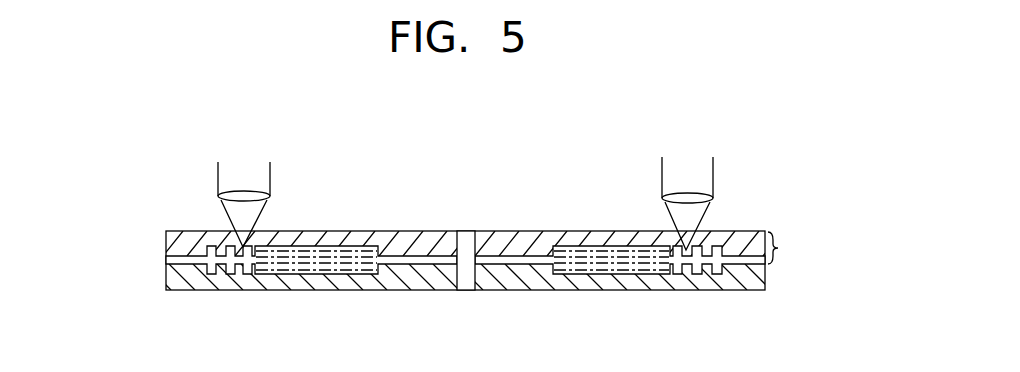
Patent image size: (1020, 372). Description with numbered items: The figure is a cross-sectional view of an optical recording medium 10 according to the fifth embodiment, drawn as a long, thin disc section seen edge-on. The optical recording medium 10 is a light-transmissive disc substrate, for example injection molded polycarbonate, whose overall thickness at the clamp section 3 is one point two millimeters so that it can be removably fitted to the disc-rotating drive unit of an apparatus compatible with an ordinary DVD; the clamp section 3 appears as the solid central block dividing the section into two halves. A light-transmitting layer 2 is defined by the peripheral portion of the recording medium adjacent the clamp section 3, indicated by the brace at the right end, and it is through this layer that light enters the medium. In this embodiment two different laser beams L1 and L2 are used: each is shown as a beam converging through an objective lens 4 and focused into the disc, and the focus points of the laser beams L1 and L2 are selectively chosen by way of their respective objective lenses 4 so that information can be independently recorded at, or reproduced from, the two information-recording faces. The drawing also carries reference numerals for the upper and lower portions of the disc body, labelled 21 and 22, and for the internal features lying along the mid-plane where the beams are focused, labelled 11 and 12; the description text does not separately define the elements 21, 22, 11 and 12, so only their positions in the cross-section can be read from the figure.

The optical recording medium 10 is at (358, 184).
The light-transmitting layer 2 is at (779, 248).
The upper substrate plate 21 is at (753, 238).
The lower substrate plate 22 is at (748, 277).
The clamp section 3 is at (497, 237).
The waveguide groove 11 is at (595, 238).
The waveguide core 12 is at (615, 268).
The objective lens 4 is at (250, 192).
The first laser beam L1 is at (218, 172).
The second laser beam L2 is at (662, 165).